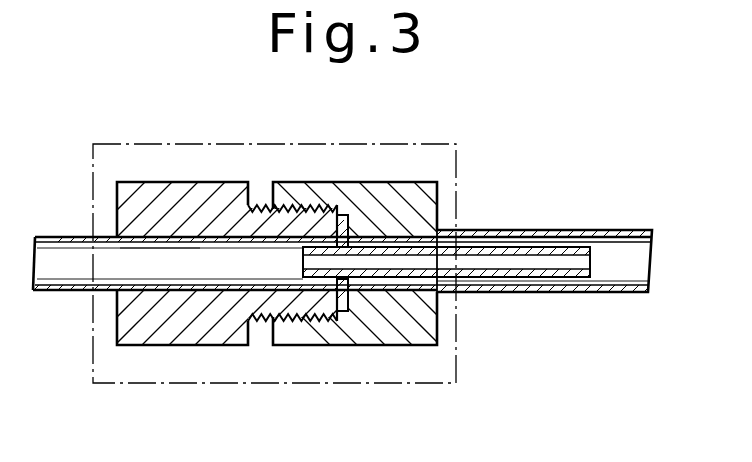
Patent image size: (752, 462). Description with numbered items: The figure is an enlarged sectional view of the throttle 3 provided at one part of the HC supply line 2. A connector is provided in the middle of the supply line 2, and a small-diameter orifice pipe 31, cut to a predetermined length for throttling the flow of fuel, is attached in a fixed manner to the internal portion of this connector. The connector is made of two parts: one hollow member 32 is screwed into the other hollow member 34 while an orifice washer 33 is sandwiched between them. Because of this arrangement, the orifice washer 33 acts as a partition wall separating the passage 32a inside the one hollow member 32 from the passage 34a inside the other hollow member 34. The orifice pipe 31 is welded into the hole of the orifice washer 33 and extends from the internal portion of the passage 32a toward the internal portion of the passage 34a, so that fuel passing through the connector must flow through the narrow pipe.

The HC supply line 2 is at (53, 237).
The throttle 3 is at (457, 361).
The orifice pipe 31 is at (515, 243).
The hollow member 32 is at (202, 198).
The passage 32a is at (158, 247).
The orifice washer 33 is at (381, 190).
The hollow member 34 is at (342, 188).
The passage 34a is at (622, 258).